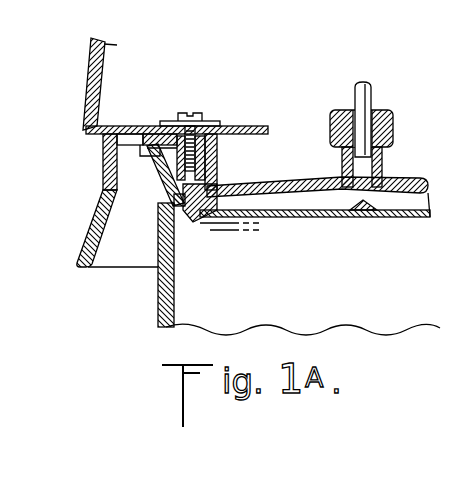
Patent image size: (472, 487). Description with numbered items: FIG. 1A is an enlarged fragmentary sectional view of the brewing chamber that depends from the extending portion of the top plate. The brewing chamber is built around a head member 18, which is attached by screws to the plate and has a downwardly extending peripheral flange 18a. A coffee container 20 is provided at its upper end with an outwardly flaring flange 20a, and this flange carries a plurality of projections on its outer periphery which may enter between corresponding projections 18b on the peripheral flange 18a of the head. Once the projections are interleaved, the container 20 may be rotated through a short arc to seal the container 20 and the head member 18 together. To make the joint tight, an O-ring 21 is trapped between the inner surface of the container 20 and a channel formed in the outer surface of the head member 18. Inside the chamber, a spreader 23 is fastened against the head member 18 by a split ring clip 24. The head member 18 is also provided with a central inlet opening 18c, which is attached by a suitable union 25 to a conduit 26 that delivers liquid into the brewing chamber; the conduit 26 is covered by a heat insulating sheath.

The head member 18 is at (290, 187).
The peripheral flange 18a is at (82, 240).
The projections 18b is at (112, 202).
The central inlet opening 18c is at (369, 171).
The coffee container 20 is at (160, 308).
The outwardly flaring flange 20a is at (112, 153).
The O-ring 21 is at (158, 206).
The spreader 23 is at (286, 220).
The split ring clip 24 is at (213, 222).
The union 25 is at (395, 124).
The conduit 26 is at (373, 93).